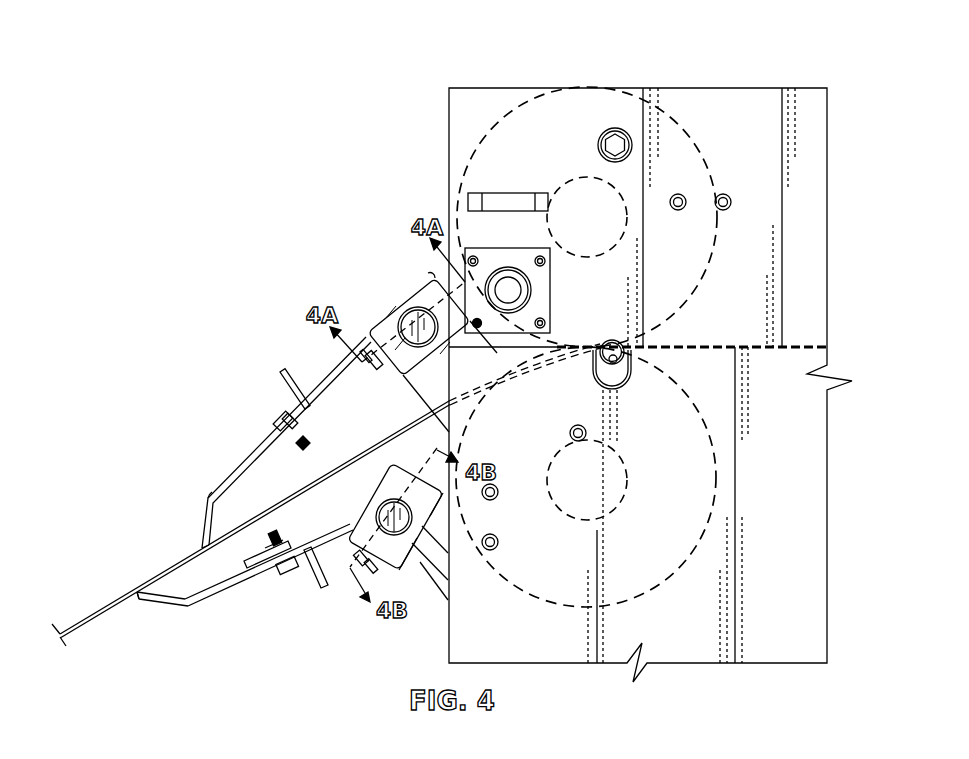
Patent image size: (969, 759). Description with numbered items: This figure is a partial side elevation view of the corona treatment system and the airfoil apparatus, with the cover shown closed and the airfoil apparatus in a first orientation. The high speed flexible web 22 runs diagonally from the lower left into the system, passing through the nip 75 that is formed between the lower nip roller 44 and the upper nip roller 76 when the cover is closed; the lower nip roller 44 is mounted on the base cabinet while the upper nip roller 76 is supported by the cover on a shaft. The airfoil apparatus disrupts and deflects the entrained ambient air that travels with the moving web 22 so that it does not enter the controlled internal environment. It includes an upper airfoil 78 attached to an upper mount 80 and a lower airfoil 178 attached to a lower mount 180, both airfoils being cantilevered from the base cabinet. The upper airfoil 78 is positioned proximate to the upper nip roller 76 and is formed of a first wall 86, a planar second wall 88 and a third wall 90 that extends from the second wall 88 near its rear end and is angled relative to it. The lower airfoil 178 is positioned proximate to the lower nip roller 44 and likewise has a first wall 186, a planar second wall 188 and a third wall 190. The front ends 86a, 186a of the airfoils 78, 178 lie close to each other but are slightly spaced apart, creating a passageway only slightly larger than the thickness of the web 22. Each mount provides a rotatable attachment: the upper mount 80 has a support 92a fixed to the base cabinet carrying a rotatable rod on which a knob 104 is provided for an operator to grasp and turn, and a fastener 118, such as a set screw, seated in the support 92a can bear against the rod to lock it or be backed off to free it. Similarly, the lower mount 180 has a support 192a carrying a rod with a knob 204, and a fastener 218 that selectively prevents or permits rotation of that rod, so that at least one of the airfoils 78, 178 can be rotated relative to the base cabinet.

The web 22 is at (82, 629).
The lower nip roller 44 is at (670, 576).
The nip 75 is at (650, 342).
The upper nip roller 76 is at (708, 168).
The upper airfoil 78 is at (208, 479).
The upper mount 80 is at (362, 323).
The first wall 86 is at (205, 520).
The front end 86a is at (200, 550).
The second wall 88 is at (262, 447).
The third wall 90 is at (281, 376).
The support 92a is at (431, 278).
The knob 104 is at (480, 322).
The fastener 118 is at (383, 373).
The lower airfoil 178 is at (200, 606).
The lower mount 180 is at (352, 567).
The first wall 186 is at (157, 602).
The front end 186a is at (133, 592).
The second wall 188 is at (250, 578).
The third wall 190 is at (322, 576).
The support 192a is at (375, 560).
The knob 204 is at (410, 533).
The fastener 218 is at (378, 572).